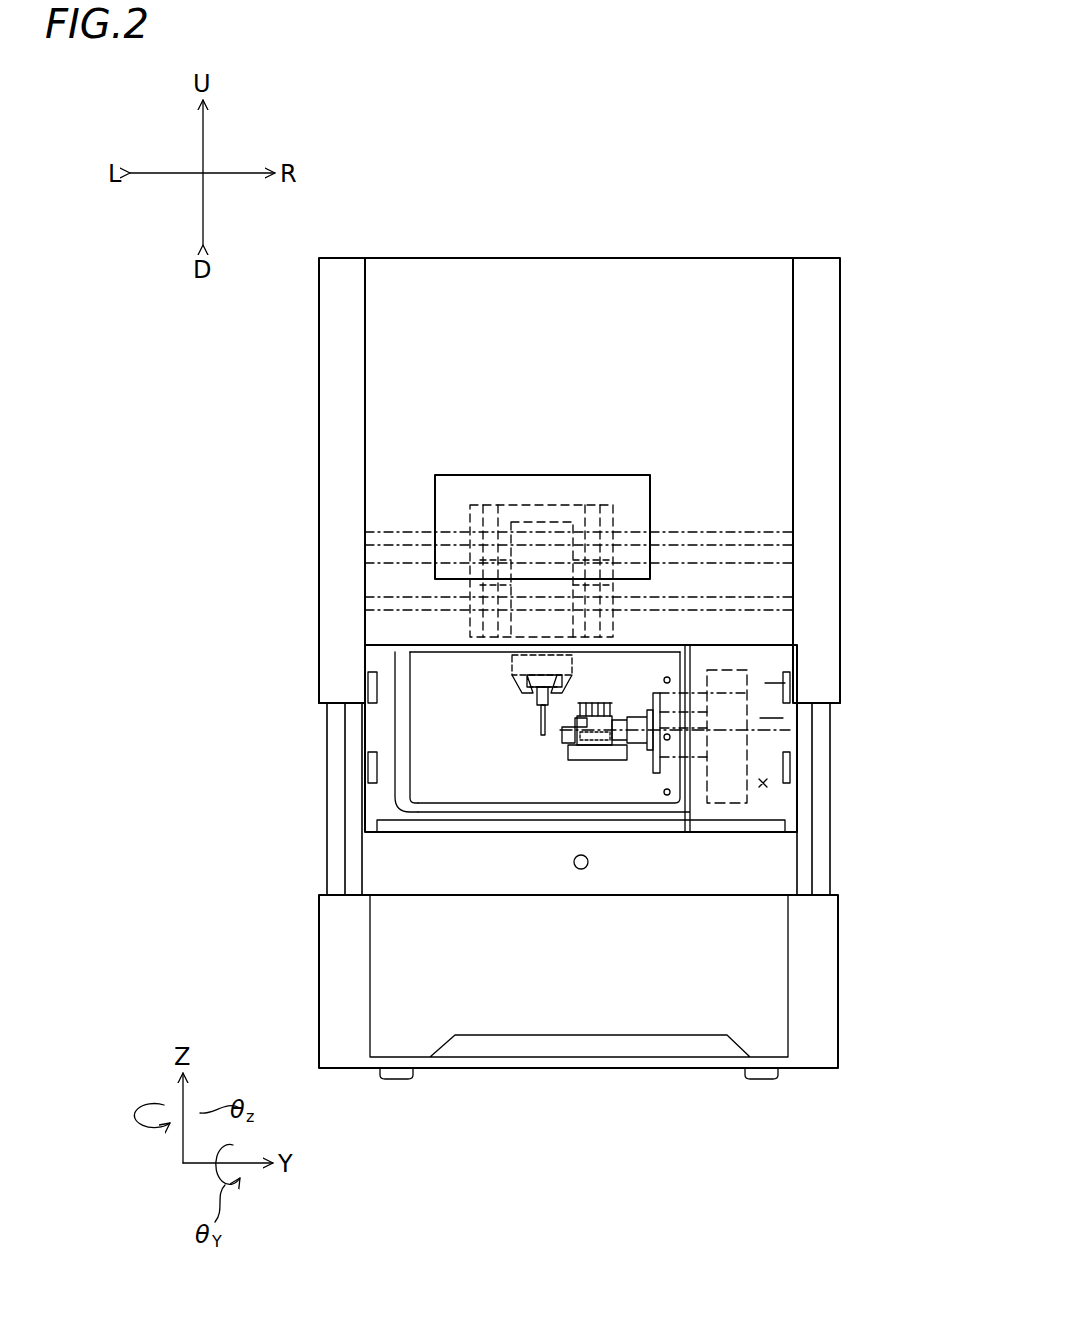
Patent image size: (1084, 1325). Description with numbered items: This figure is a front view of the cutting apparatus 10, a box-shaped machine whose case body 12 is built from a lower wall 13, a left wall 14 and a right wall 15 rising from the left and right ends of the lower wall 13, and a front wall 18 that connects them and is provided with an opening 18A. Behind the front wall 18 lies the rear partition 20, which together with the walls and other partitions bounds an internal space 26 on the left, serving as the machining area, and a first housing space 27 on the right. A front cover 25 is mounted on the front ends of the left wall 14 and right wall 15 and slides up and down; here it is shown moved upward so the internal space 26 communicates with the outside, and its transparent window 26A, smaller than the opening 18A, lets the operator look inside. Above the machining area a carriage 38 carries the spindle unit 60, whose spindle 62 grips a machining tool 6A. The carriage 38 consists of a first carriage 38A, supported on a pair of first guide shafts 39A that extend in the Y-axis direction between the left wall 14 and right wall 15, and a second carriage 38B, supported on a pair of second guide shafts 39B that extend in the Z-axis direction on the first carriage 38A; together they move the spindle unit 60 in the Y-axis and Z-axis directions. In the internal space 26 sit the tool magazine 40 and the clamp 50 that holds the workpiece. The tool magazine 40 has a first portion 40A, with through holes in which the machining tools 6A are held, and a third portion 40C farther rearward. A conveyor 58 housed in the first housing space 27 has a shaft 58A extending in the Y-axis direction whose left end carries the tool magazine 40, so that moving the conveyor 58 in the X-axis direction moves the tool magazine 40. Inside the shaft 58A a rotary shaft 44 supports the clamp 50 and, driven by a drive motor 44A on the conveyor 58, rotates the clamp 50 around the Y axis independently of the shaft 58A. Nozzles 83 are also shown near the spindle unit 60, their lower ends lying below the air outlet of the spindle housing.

The cutting apparatus 10 is at (855, 230).
The case body 12 is at (842, 953).
The lower wall 13 is at (393, 1080).
The left wall 14 is at (345, 735).
The right wall 15 is at (830, 740).
The front wall 18 is at (766, 686).
The opening 18A is at (422, 710).
The rear partition 20 is at (424, 780).
The front cover 25 is at (740, 300).
The internal space 26 is at (398, 796).
The window 26A is at (452, 476).
The first housing space 27 is at (768, 783).
The carriage 38 is at (616, 503).
The first carriage 38A is at (543, 522).
The second carriage 38B is at (573, 688).
The first guide shafts 39A is at (386, 596).
The second guide shafts 39B is at (493, 505).
The tool magazine 40 is at (618, 748).
The first portion 40A is at (600, 748).
The third portion 40C is at (588, 748).
The rotary shaft 44 is at (700, 797).
The drive motor 44A is at (740, 672).
The clamp 50 is at (566, 750).
The conveyor 58 is at (760, 718).
The shaft 58A is at (648, 762).
The spindle unit 60 is at (505, 676).
The spindle 62 is at (525, 665).
The machining tools 6A is at (543, 737).
The nozzles 83 is at (580, 748).